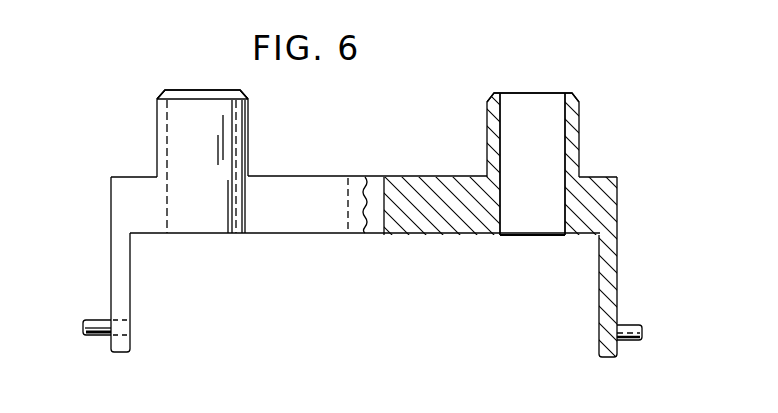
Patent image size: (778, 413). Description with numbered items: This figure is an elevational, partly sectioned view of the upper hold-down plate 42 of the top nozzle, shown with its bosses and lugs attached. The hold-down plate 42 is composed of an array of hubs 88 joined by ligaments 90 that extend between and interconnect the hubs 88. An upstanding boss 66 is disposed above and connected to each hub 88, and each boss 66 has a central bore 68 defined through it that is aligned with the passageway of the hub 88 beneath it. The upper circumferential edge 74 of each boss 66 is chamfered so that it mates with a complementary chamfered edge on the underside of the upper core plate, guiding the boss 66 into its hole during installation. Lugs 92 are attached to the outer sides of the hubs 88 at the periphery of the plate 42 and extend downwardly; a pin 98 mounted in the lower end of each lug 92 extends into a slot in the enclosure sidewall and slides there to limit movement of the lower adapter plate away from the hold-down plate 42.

The upper hold-down plate 42 is at (605, 145).
The boss 66 is at (155, 158).
The central bore 68 is at (567, 128).
The upper circumferential edge 74 is at (160, 93).
The hub 88 is at (200, 220).
The ligament 90 is at (420, 227).
The lug 92 is at (110, 282).
The pin 98 is at (100, 337).